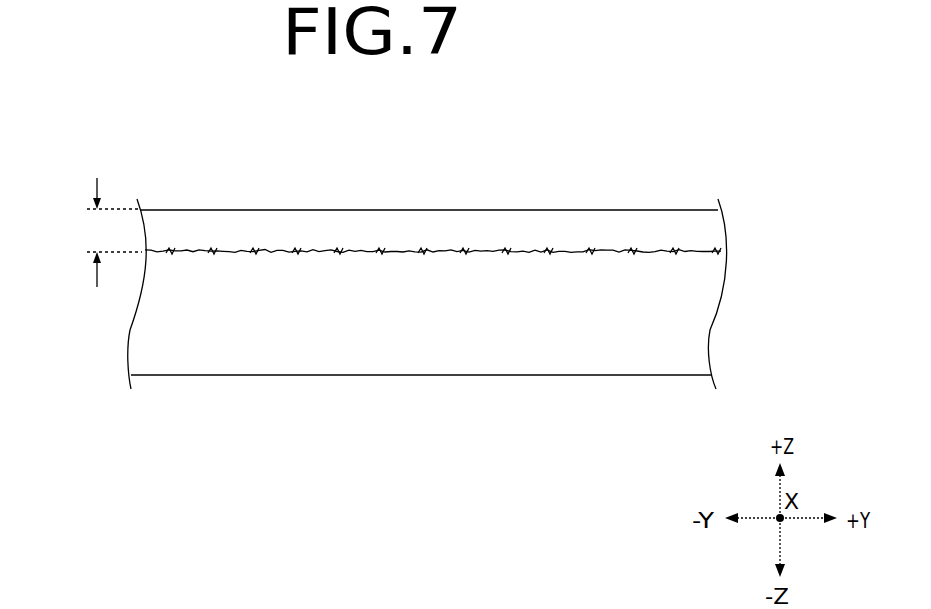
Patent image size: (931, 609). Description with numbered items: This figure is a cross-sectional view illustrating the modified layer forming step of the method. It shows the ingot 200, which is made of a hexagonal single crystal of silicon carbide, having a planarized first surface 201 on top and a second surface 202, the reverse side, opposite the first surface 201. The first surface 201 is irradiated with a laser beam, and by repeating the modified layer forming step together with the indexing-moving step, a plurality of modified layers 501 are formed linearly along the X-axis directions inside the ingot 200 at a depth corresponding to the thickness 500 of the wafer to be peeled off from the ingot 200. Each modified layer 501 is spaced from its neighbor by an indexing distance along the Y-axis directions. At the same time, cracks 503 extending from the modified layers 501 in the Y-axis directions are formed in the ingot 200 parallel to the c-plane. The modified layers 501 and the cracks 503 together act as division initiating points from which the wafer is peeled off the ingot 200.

The ingot 200 is at (692, 191).
The first surface 201 is at (520, 210).
The second surface 202 is at (558, 375).
The thickness 500 is at (97, 232).
The modified layers 501 is at (168, 252).
The cracks 503 is at (206, 252).